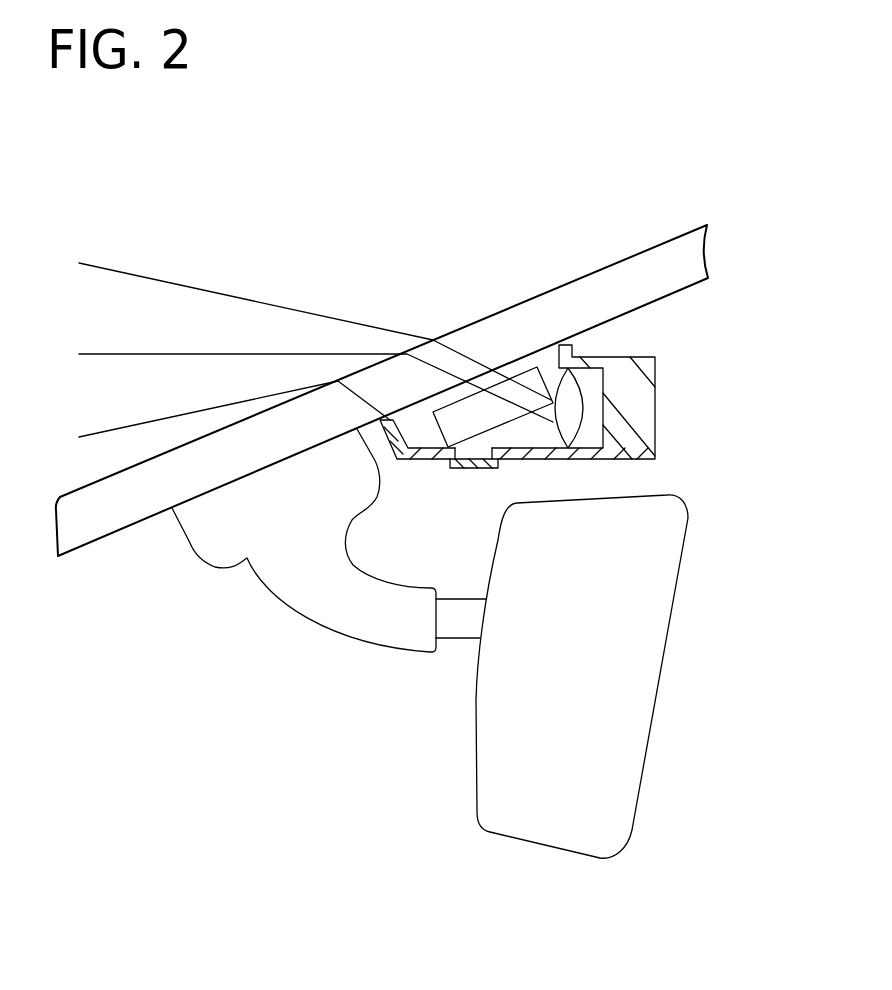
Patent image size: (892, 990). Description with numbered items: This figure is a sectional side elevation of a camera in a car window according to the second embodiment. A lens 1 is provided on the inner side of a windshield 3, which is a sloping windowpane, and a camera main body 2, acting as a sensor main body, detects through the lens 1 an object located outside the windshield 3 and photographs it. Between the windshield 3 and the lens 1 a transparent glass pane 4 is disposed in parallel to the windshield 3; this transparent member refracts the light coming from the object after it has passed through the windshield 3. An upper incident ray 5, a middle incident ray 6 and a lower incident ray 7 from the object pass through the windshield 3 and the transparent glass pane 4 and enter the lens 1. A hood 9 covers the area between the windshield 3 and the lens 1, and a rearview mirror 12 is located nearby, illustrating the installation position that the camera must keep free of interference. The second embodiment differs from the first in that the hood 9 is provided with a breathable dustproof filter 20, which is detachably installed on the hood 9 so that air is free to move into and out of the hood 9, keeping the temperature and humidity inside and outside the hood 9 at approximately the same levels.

The lens 1 is at (588, 452).
The camera main body 2 is at (655, 430).
The windshield 3 is at (603, 272).
The transparent glass pane 4 is at (447, 446).
The upper incident ray 5 is at (285, 308).
The middle incident ray 6 is at (203, 354).
The lower incident ray 7 is at (118, 429).
The hood 9 is at (497, 465).
The rearview mirror 12 is at (650, 710).
The breathable dustproof filter 20 is at (470, 466).